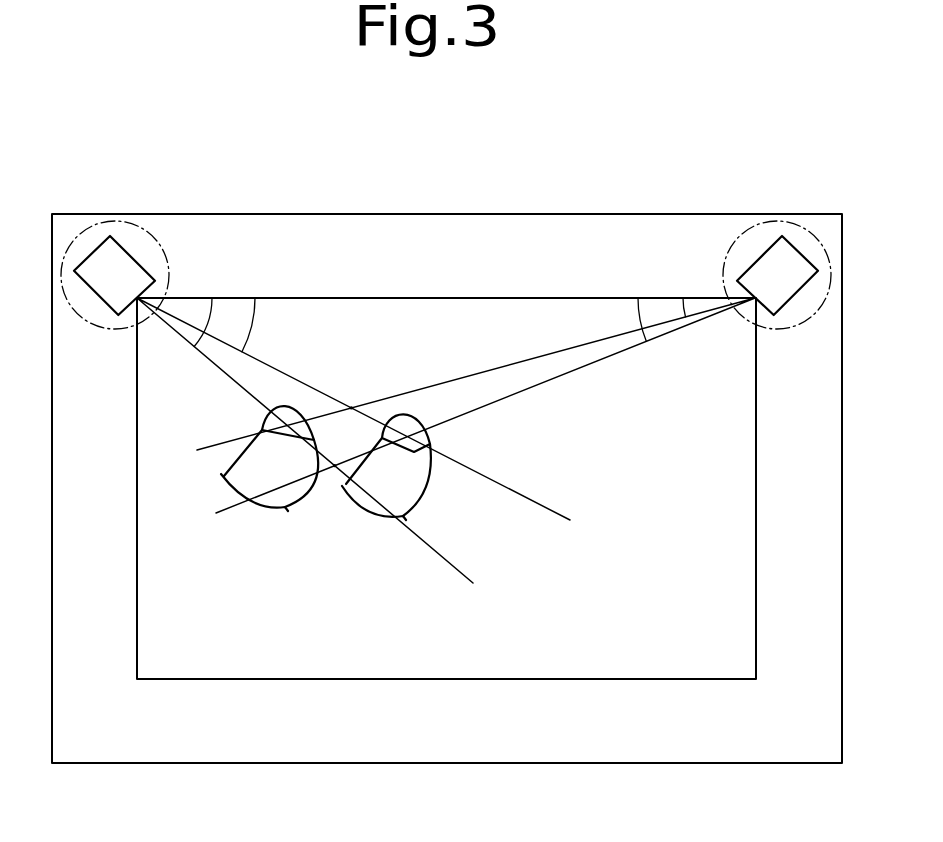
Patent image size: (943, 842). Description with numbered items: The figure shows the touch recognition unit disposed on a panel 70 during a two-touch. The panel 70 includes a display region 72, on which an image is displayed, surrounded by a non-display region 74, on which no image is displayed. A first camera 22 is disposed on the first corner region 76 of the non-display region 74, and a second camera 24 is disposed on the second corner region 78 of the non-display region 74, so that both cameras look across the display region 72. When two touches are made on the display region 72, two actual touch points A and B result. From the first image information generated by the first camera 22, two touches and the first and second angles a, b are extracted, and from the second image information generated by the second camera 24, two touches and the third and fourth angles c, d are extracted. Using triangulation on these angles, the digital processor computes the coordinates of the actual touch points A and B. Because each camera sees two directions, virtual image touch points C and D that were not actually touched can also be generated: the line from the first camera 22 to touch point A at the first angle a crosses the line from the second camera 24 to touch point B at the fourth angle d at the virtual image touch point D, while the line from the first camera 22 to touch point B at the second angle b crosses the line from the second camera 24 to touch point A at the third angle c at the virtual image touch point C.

The panel 70 is at (447, 436).
The display region 72 is at (373, 312).
The non-display region 74 is at (554, 240).
The first camera 22 is at (138, 258).
The second camera 24 is at (757, 253).
The first corner region 76 is at (88, 233).
The second corner region 78 is at (815, 238).
The first touch point A is at (288, 418).
The second touch point B is at (407, 437).
The virtual image touch point C is at (352, 408).
The virtual image touch point D is at (335, 470).
The first angle a is at (209, 322).
The second angle b is at (258, 325).
The third angle c is at (674, 309).
The fourth angle d is at (632, 319).